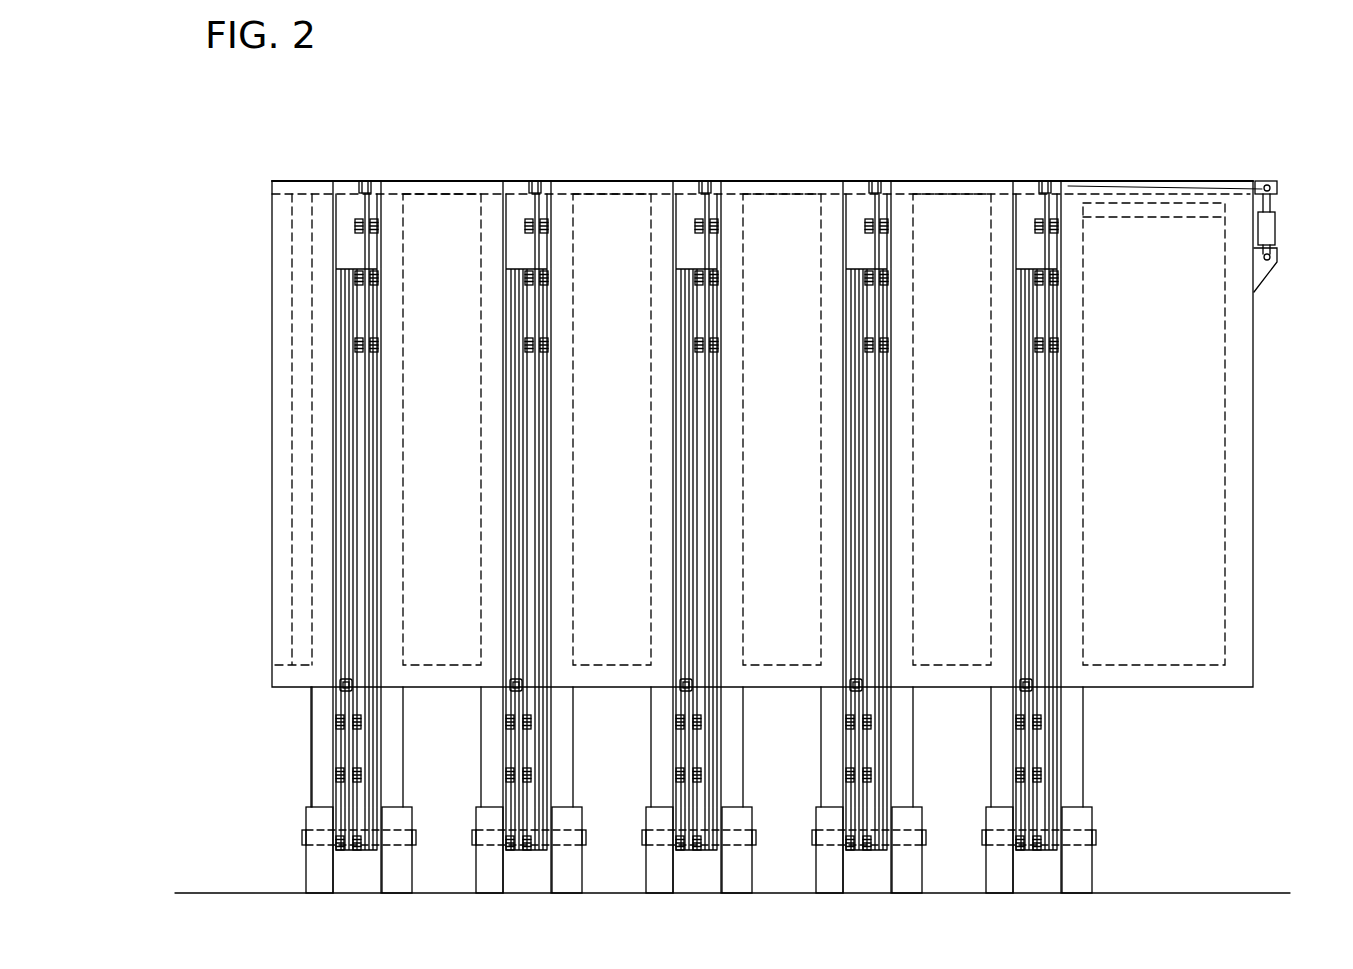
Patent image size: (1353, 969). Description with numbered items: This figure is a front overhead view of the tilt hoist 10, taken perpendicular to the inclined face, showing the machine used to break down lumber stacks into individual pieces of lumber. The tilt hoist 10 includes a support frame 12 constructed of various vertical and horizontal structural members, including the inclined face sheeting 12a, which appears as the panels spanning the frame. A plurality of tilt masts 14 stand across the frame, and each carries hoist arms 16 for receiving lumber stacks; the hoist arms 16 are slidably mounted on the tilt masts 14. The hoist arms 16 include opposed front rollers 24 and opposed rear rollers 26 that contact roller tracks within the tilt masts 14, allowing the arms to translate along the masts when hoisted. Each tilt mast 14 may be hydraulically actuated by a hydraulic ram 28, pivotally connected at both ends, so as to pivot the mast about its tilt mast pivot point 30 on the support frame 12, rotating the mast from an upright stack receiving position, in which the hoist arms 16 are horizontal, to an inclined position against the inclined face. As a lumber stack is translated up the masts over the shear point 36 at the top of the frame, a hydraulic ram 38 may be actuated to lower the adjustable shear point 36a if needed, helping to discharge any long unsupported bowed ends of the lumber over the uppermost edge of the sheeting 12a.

The tilt hoist 10 is at (963, 142).
The support frame 12 is at (270, 362).
The inclined face sheeting 12a is at (317, 504).
The tilt masts 14 is at (344, 313).
The hoist arms 16 is at (364, 181).
The front rollers 24 is at (375, 345).
The rear rollers 26 is at (355, 226).
The hydraulic ram 28 is at (828, 448).
The tilt mast pivot point 30 is at (415, 842).
The shear point 36 is at (620, 178).
The adjustable shear point 36a is at (1262, 178).
The hydraulic ram 38 is at (1266, 228).